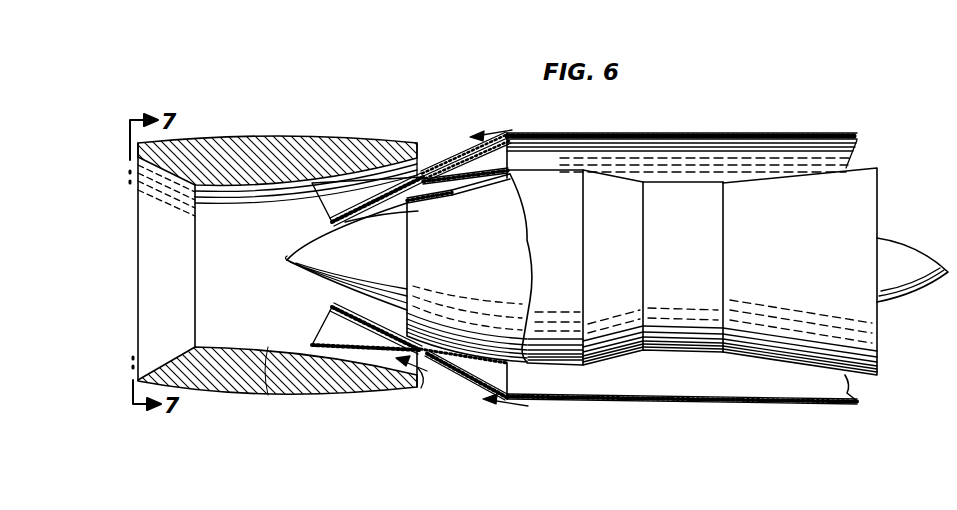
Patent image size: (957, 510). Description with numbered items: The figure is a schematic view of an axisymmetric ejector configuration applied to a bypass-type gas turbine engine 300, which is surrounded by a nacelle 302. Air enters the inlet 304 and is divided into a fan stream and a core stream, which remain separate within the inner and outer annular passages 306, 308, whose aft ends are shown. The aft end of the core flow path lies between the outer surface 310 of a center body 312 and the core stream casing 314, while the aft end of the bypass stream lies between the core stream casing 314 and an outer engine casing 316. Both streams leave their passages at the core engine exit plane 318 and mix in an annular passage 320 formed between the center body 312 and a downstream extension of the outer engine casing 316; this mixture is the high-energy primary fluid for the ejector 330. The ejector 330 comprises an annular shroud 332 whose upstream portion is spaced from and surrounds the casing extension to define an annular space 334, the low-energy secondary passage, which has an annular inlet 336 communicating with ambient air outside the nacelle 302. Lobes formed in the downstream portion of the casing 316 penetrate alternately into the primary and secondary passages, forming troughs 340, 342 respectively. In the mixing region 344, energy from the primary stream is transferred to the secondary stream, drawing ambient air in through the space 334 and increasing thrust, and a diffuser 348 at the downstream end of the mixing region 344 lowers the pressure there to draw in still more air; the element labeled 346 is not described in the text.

The bypass-type gas turbine engine 300 is at (696, 252).
The nacelle 302 is at (683, 402).
The inlet 304 is at (880, 187).
The inner annular passage 306 is at (443, 202).
The outer annular passage 308 is at (510, 181).
The outer surface of center body 310 is at (420, 212).
The center body 312 is at (320, 262).
The core stream casing 314 is at (424, 175).
The outer engine casing 316 is at (458, 358).
The core engine exit plane 318 is at (407, 258).
The annular passage 320 is at (393, 205).
The ejector 330 is at (220, 400).
The annular shroud 332 is at (273, 150).
The annular space 334 is at (367, 355).
The annular inlet 336 is at (416, 382).
The troughs in primary passage 340 is at (322, 335).
The troughs in secondary passage 342 is at (333, 211).
The mixing region 344 is at (250, 276).
The lower plate rib 346 is at (268, 348).
The diffuser 348 is at (163, 175).